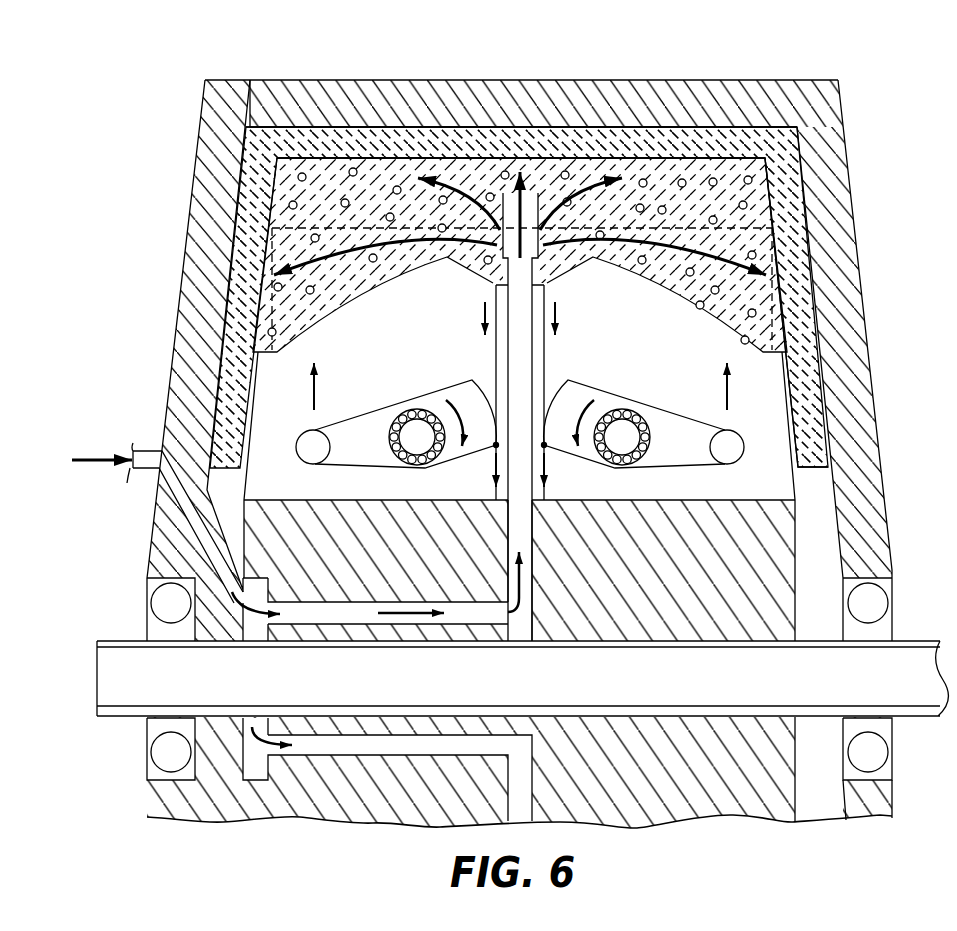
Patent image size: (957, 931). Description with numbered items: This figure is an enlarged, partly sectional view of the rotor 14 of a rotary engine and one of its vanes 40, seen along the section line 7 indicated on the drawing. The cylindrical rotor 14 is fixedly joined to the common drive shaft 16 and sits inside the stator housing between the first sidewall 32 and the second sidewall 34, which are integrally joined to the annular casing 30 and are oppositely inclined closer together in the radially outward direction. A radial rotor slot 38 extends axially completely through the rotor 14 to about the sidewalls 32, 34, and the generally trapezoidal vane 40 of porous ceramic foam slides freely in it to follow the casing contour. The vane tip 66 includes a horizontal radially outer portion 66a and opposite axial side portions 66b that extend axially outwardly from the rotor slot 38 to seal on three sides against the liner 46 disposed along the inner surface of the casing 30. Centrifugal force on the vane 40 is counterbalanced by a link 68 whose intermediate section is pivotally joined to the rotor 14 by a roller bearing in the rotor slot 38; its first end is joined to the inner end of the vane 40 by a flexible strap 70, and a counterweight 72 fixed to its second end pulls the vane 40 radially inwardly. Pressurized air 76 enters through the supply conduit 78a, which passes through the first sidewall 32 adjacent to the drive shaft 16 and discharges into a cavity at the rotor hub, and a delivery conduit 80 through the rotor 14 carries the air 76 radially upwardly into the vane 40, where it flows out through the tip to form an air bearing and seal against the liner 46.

The section line 7- 7 is at (522, 63).
The rotor 14 is at (799, 496).
The drive shaft 16 is at (97, 683).
The casing 30 is at (729, 78).
The first sidewall 32 is at (184, 258).
The second sidewall 34 is at (862, 282).
The rotor slot 38 is at (668, 343).
The vane 40 is at (679, 218).
The liner 46 is at (805, 382).
The vane tip 66 is at (771, 189).
The radially outer portion 66a is at (604, 158).
The axial side portion 66b is at (274, 177).
The link 68 is at (403, 412).
The flexible strap 70 is at (496, 292).
The counterweight 72 is at (296, 450).
The pressurized air 76 is at (90, 457).
The supply conduit 78a is at (148, 441).
The delivery conduit 80 is at (345, 615).